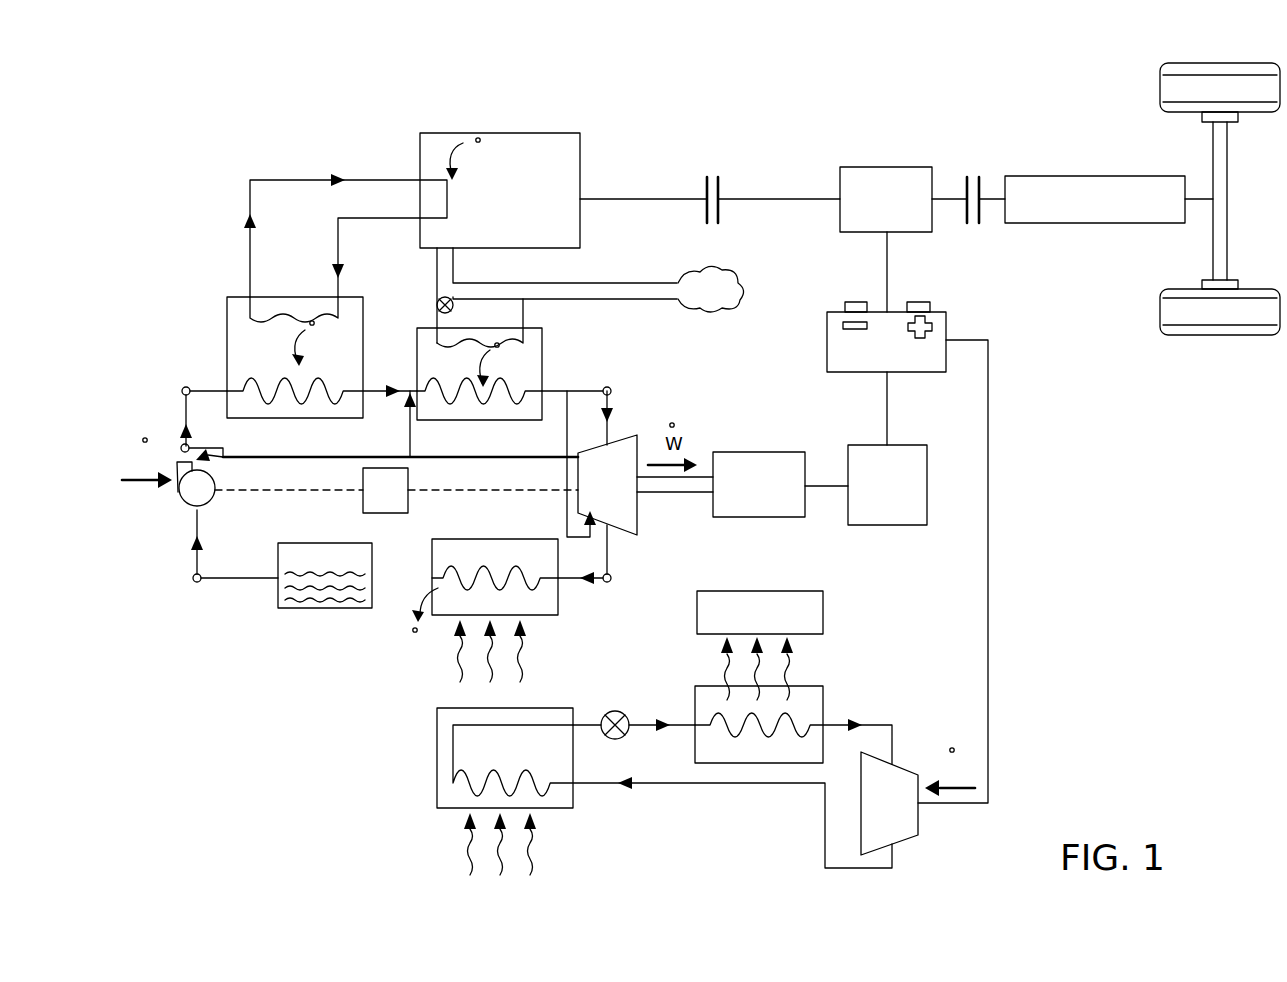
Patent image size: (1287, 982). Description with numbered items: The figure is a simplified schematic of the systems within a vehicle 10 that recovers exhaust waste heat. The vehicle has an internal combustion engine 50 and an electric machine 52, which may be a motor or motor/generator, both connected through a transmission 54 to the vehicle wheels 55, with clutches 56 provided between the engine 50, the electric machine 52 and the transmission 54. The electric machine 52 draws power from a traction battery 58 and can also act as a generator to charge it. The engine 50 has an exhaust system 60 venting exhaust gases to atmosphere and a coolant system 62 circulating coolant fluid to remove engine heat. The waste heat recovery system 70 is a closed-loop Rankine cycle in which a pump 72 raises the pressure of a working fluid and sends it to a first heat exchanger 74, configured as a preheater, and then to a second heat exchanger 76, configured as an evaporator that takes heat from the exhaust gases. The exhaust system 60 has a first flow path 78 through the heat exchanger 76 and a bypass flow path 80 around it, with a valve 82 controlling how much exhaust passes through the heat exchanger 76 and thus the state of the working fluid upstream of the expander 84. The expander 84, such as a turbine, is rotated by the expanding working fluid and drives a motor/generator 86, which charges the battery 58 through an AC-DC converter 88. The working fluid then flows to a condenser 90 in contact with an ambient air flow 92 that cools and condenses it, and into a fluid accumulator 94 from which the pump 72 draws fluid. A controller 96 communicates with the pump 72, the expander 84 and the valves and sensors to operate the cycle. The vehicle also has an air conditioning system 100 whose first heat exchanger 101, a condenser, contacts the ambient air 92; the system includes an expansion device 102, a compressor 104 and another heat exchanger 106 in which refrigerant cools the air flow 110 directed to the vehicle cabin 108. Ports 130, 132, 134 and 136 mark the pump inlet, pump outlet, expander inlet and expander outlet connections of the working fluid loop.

The vehicle 10 is at (295, 782).
The internal combustion engine 50 is at (578, 158).
The electric machine 52 is at (852, 167).
The transmission 54 is at (1088, 176).
The vehicle wheels 55 is at (1178, 336).
The clutches 56 is at (712, 175).
The traction battery 58 is at (827, 327).
The exhaust system 60 is at (580, 283).
The coolant system 62 is at (287, 179).
The waste heat recovery system 70 is at (183, 661).
The pump 72 is at (210, 500).
The first heat exchanger 74 is at (318, 418).
The second heat exchanger 76 is at (465, 420).
The first flow path 78 is at (477, 337).
The bypass flow path 80 is at (480, 283).
The valve 82 is at (437, 302).
The expander 84 is at (630, 437).
The motor/generator 86 is at (758, 452).
The AC-DC converter 88 is at (927, 478).
The condenser 90 is at (485, 539).
The ambient air flow 92 is at (557, 670).
The fluid accumulator 94 is at (323, 609).
The controller 96 is at (385, 490).
The air conditioning system 100 is at (696, 828).
The first heat exchanger 101 is at (437, 775).
The expansion device 102 is at (613, 710).
The compressor 104 is at (905, 767).
The heat exchanger 106 is at (823, 703).
The vehicle cabin 108 is at (765, 591).
The air flow 110 is at (713, 664).
The pump inlet port 130 is at (223, 562).
The pump outlet port 132 is at (193, 403).
The turbine inlet port 134 is at (588, 376).
The turbine outlet port 136 is at (597, 593).